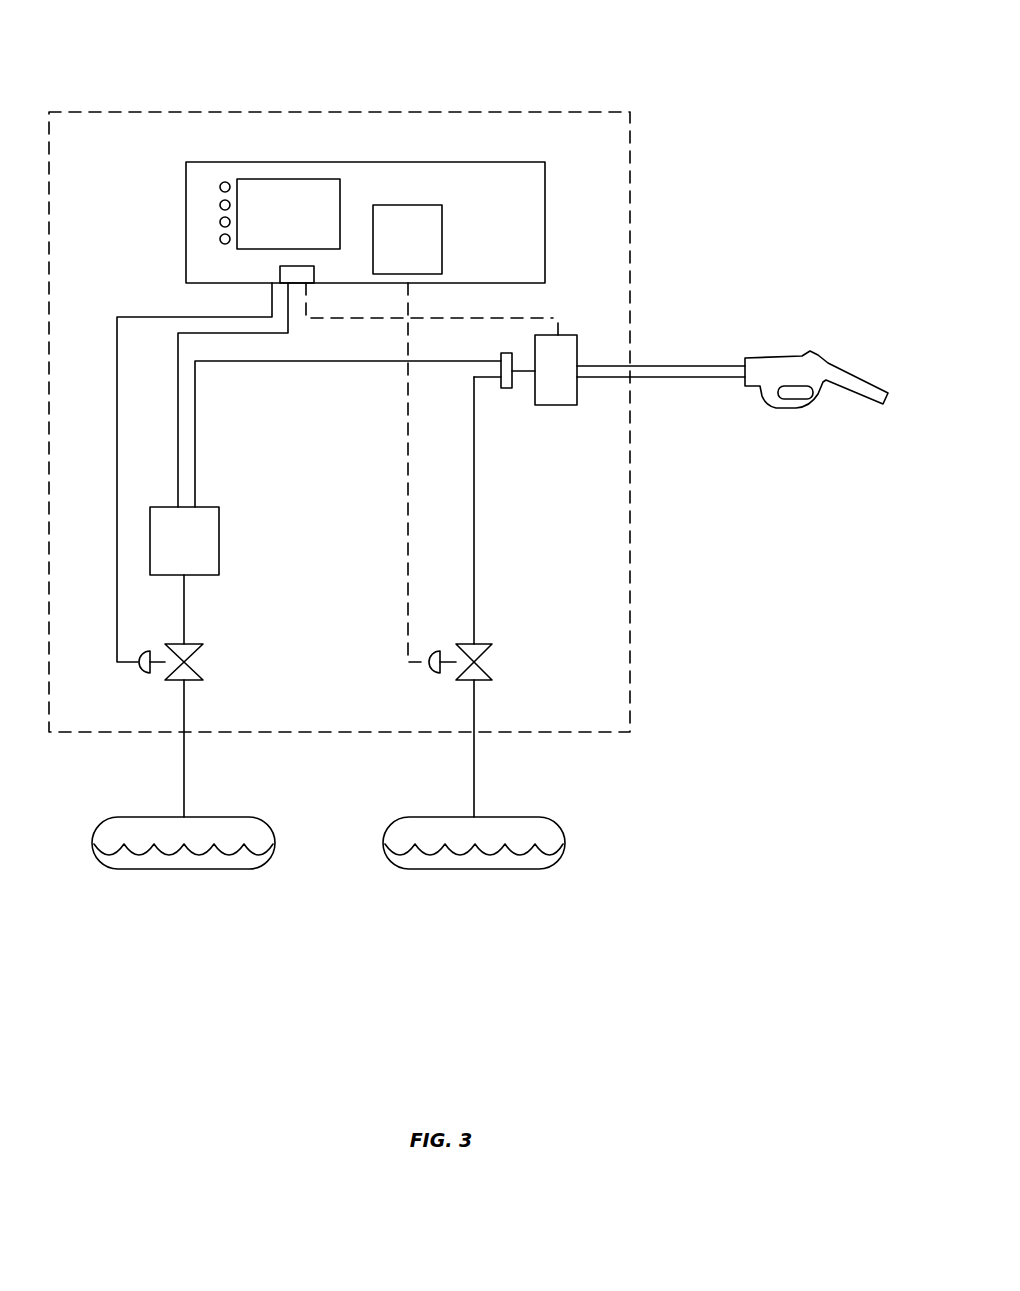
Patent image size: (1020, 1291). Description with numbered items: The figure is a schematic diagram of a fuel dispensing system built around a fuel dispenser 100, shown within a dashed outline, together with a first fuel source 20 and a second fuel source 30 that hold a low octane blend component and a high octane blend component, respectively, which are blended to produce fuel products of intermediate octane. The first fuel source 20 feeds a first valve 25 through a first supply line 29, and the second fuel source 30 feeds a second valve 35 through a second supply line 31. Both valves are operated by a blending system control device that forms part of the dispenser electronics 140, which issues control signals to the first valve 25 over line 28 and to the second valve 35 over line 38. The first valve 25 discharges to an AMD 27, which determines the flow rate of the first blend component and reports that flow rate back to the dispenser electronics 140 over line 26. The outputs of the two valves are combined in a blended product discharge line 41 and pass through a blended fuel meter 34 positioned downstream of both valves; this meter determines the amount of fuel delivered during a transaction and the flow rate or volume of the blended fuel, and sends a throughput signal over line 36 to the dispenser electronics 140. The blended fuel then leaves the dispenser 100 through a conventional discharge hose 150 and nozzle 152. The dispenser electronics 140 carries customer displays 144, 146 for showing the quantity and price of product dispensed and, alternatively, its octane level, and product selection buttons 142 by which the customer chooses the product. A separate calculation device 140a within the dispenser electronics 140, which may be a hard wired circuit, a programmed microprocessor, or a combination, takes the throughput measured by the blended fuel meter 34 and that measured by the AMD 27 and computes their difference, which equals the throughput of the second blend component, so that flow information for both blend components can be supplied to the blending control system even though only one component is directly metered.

The fuel dispenser 100 is at (599, 95).
The dispenser electronics 140 is at (440, 162).
The calculation device 140a is at (280, 272).
The product selection buttons 142 is at (220, 188).
The customer display 144 is at (340, 192).
The customer display 146 is at (442, 228).
The line 28 is at (146, 317).
The line 26 is at (178, 483).
The AMD 27 is at (205, 507).
The first valve 25 is at (190, 650).
The first supply line 29 is at (184, 800).
The first fuel source 20 is at (240, 817).
The line 38 is at (406, 484).
The second valve 35 is at (481, 650).
The second supply line 31 is at (474, 800).
The second fuel source 30 is at (530, 817).
The blended product discharge line 41 is at (521, 373).
The blended fuel meter 34 is at (565, 335).
The line 36 is at (547, 318).
The discharge hose 150 is at (681, 366).
The nozzle 152 is at (812, 356).